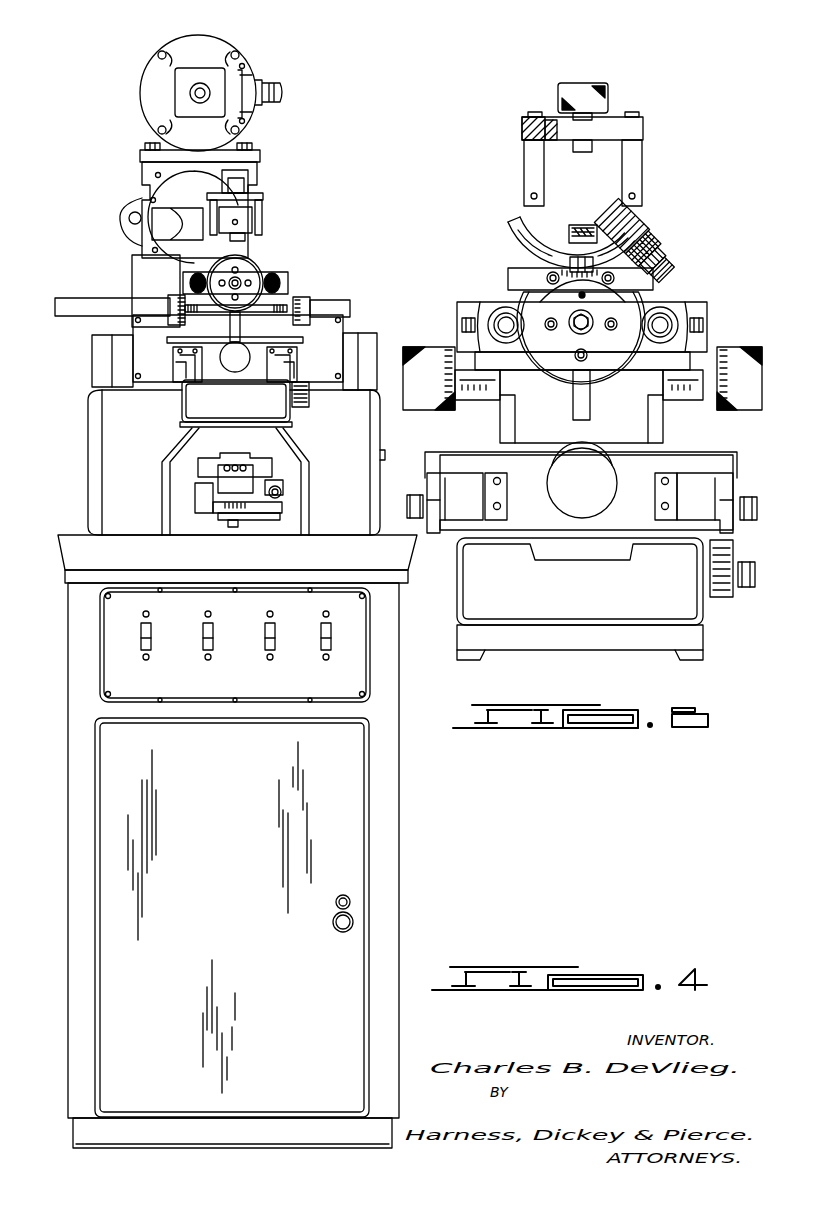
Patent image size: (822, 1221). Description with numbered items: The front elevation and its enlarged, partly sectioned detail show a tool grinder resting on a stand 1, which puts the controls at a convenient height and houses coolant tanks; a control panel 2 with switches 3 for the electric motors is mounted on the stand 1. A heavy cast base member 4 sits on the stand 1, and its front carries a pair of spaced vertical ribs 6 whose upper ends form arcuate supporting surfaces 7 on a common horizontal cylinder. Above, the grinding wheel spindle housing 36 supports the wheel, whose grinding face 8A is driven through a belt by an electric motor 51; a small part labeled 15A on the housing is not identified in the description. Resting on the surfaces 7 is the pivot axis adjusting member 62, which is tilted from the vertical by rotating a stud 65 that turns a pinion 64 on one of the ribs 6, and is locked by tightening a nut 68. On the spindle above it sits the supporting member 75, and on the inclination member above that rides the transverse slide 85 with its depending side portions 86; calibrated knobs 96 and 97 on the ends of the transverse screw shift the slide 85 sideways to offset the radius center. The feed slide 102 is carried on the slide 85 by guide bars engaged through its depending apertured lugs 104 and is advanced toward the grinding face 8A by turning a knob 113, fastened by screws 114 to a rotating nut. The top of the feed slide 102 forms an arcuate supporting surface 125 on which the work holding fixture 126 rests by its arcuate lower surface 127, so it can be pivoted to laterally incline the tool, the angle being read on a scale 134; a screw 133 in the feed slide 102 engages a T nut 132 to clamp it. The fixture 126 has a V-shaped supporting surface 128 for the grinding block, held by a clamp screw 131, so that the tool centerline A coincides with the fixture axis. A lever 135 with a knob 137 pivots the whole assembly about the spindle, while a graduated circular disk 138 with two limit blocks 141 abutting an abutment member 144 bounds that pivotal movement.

In FIG. 4, the stand 1 is at (392, 800).
In FIG. 4, the control panel 2 is at (306, 640).
In FIG. 4, the switches 3 is at (200, 648).
In FIG. 5, the base member 4 is at (606, 643).
In FIG. 4, the vertical ribs 6 is at (170, 452).
In FIG. 5, the vertical ribs 6 is at (474, 524).
In FIG. 4, the arcuate supporting surfaces 7 is at (303, 358).
In FIG. 5, the arcuate supporting surfaces 7 is at (470, 478).
In FIG. 4, the grinding face 8A is at (160, 226).
In FIG. 4, the ear lug 15A is at (128, 217).
In FIG. 4, the grinding wheel spindle housing 36 is at (366, 342).
In FIG. 4, the electric motor 51 is at (208, 45).
In FIG. 4, the pivot axis adjusting member 62 is at (250, 449).
In FIG. 5, the pinion 64 is at (712, 578).
In FIG. 4, the stud 65 is at (311, 396).
In FIG. 5, the stud 65 is at (752, 598).
In FIG. 5, the nut 68 is at (742, 496).
In FIG. 4, the supporting member 75 is at (205, 328).
In FIG. 5, the supporting member 75 is at (548, 420).
In FIG. 4, the transverse slide 85 is at (290, 290).
In FIG. 5, the transverse slide 85 is at (698, 312).
In FIG. 5, the depending side portions 86 is at (468, 405).
In FIG. 4, the calibrated knob 96 is at (168, 302).
In FIG. 4, the calibrated knob 97 is at (318, 302).
In FIG. 5, the feed slide 102 is at (505, 298).
In FIG. 5, the depending apertured lugs 104 is at (490, 338).
In FIG. 4, the knob 113 is at (260, 266).
In FIG. 5, the knob 113 is at (612, 328).
In FIG. 5, the screws 114 is at (586, 295).
In FIG. 5, the arcuate supporting surface 125 is at (518, 248).
In FIG. 5, the work holding fixture 126 is at (640, 216).
In FIG. 5, the arcuate lower surface 127 is at (652, 240).
In FIG. 5, the V-shaped supporting surface 128 is at (560, 222).
In FIG. 5, the clamp screw 131 is at (605, 92).
In FIG. 5, the T nut 132 is at (660, 250).
In FIG. 5, the screw 133 is at (665, 266).
In FIG. 5, the scale 134 is at (510, 275).
In FIG. 5, the lever 135 is at (590, 410).
In FIG. 4, the knob 137 is at (239, 372).
In FIG. 5, the knob 137 is at (582, 480).
In FIG. 4, the circular disk 138 is at (262, 522).
In FIG. 4, the limit blocks 141 is at (200, 500).
In FIG. 4, the abutment member 144 is at (210, 478).
In FIG. 4, the centerline of the grinding tool A is at (345, 444).